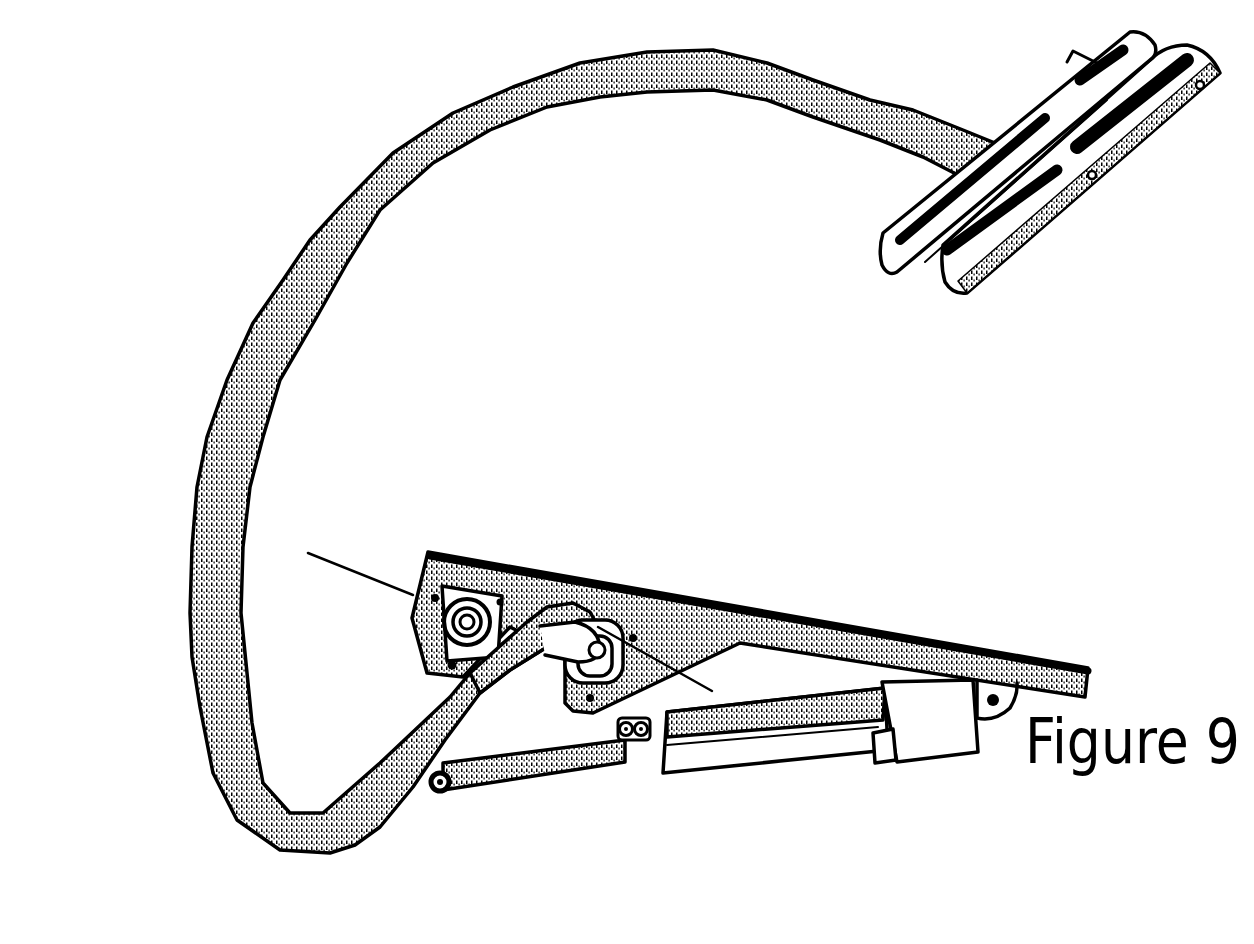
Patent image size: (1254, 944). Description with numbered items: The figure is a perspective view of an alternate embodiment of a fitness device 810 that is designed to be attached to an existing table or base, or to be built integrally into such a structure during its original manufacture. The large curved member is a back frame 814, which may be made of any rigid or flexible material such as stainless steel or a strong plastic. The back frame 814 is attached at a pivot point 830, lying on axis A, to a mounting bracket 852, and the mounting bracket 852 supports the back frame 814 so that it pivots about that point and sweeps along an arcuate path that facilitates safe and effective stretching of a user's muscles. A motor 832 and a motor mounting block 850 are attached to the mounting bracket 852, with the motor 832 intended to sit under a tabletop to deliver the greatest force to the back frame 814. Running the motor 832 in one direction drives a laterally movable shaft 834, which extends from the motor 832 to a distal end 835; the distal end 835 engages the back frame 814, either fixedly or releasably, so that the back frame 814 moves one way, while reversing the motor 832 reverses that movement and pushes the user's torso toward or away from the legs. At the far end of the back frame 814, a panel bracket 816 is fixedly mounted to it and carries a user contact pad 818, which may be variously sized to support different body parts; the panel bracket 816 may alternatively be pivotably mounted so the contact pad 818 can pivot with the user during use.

The fitness device 810 is at (1058, 524).
The back frame 814 is at (316, 240).
The panel bracket 816 is at (955, 172).
The user contact pad 818 is at (1048, 222).
The pivot point 830 is at (600, 660).
The motor 832 is at (757, 712).
The laterally movable shaft 834 is at (524, 773).
The distal end 835 is at (432, 791).
The motor mounting block 850 is at (913, 743).
The mounting bracket 852 is at (678, 637).